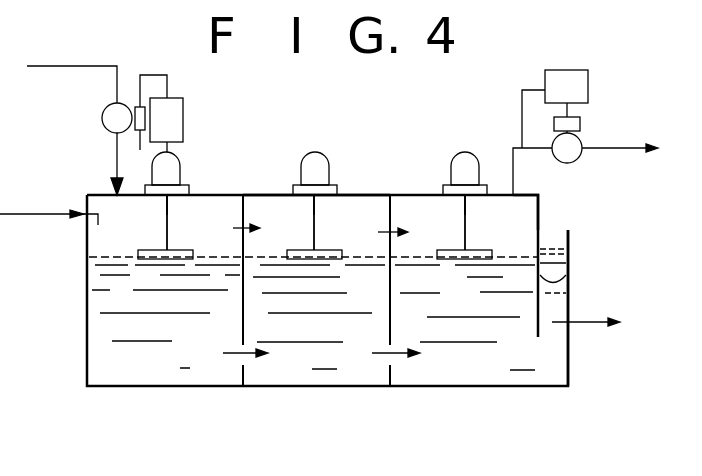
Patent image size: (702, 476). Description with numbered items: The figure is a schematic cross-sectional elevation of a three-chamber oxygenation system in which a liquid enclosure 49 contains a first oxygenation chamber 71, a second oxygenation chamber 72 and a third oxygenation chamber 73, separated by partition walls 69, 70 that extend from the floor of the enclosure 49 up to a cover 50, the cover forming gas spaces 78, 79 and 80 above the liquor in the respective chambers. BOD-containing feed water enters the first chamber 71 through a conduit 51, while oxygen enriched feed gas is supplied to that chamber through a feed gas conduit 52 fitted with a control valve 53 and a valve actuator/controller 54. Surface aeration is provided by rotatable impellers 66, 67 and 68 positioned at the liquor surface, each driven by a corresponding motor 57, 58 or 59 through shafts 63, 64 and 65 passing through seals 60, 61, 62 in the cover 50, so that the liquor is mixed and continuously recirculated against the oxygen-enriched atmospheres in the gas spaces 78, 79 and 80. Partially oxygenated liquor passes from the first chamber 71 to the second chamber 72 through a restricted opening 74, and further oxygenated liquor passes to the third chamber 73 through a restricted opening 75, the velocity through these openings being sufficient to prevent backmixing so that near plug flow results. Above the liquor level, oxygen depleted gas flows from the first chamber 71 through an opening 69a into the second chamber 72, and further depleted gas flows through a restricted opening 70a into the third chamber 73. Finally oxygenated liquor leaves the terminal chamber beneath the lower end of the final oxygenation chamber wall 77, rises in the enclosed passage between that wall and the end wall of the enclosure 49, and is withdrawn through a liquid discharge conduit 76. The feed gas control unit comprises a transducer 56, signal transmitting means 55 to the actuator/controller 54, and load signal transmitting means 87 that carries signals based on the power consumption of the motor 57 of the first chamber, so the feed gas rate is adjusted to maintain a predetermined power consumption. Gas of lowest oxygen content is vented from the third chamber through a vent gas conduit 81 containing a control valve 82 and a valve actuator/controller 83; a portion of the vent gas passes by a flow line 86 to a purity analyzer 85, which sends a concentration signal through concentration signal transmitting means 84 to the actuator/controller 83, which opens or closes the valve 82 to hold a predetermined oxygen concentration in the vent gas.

The liquid enclosure 49 is at (325, 386).
The cover 50 is at (260, 194).
The conduit 51 is at (17, 214).
The feed gas conduit 52 is at (72, 66).
The control valve 53 is at (102, 121).
The valve actuator/controller 54 is at (140, 150).
The signal transmitting means 55 is at (153, 75).
The transducer 56 is at (183, 112).
The motor 57 is at (181, 173).
The motor 58 is at (315, 152).
The motor 59 is at (467, 153).
The seal 60 is at (166, 198).
The seal 61 is at (302, 207).
The seal 62 is at (465, 203).
The shaft 63 is at (168, 240).
The shaft 64 is at (316, 232).
The shaft 65 is at (467, 232).
The rotatable impeller 66 is at (137, 253).
The rotatable impeller 67 is at (290, 252).
The rotatable impeller 68 is at (445, 255).
The partition wall 69 is at (237, 249).
The opening 69a is at (239, 196).
The partition wall 70 is at (388, 256).
The restricted opening 70a is at (389, 212).
The first oxygenation chamber 71 is at (166, 316).
The second oxygenation chamber 72 is at (319, 317).
The third oxygenation chamber 73 is at (465, 317).
The restricted opening 74 is at (240, 362).
The restricted opening 75 is at (392, 362).
The liquid discharge conduit 76 is at (588, 326).
The final oxygenation chamber wall 77 is at (548, 285).
The gas space 78 is at (222, 205).
The gas space 79 is at (368, 204).
The gas space 80 is at (527, 221).
The vent gas conduit 81 is at (627, 153).
The control valve 82 is at (583, 159).
The valve actuator/controller 83 is at (580, 127).
The concentration signal transmitting means 84 is at (571, 110).
The purity analyzer 85 is at (563, 70).
The flow line 86 is at (520, 107).
The load signal transmitting means 87 is at (175, 149).